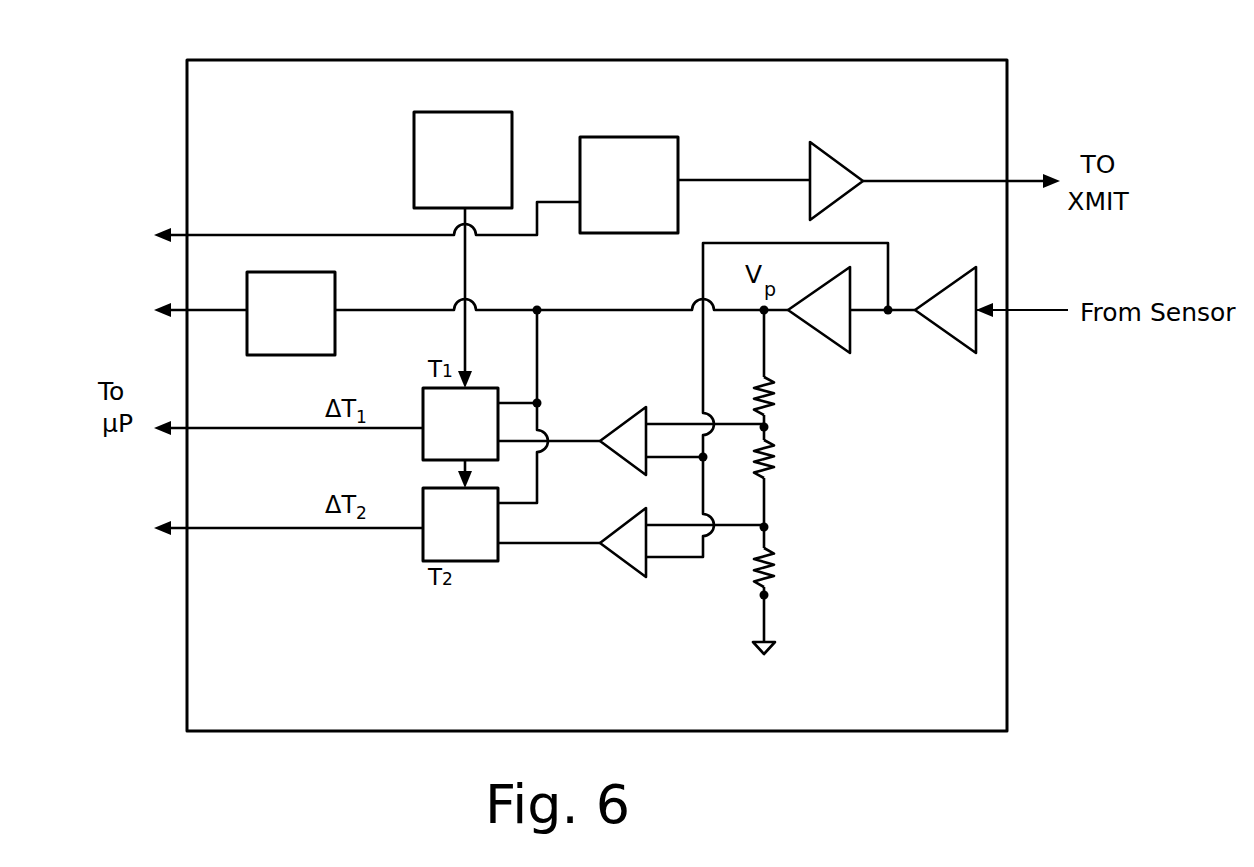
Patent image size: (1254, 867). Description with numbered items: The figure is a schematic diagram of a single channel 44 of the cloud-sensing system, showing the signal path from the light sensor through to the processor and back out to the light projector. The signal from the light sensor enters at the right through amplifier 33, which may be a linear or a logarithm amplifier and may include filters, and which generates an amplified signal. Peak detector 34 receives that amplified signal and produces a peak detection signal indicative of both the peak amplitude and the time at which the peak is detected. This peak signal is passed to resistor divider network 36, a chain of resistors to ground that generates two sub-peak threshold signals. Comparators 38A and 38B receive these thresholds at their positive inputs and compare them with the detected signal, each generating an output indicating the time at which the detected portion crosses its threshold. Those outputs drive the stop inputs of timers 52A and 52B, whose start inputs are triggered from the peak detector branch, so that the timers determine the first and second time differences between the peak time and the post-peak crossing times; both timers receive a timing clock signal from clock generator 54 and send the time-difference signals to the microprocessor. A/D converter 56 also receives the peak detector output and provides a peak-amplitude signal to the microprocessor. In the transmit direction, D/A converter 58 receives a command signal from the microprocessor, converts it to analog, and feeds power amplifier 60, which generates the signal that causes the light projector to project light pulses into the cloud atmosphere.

The amplifier 33 is at (945, 310).
The peak detector 34 is at (819, 310).
The resistor divider network 36 is at (790, 445).
The comparator 38A is at (623, 455).
The comparator 38B is at (619, 560).
The channel 44 is at (811, 482).
The timer 52A is at (423, 438).
The timer 52B is at (423, 538).
The clock generator 54 is at (463, 160).
The analog-to-digital converter 56 is at (291, 313).
The digital-to-analog converter 58 is at (629, 185).
The power amplifier 60 is at (836, 160).